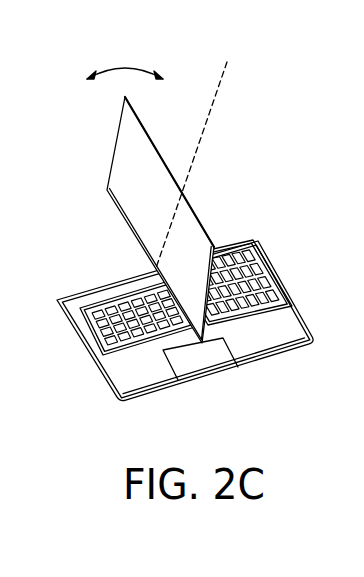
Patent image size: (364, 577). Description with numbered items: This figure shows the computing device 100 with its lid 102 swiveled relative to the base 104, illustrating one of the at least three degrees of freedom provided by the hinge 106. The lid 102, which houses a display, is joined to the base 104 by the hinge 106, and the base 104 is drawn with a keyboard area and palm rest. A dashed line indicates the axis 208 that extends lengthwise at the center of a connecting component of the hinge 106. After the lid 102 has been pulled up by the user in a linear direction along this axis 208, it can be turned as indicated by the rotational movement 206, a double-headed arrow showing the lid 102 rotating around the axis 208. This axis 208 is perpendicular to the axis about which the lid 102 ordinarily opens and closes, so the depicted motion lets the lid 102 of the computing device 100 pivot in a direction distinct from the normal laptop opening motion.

The computing device 100 is at (173, 246).
The lid 102 is at (200, 210).
The base 104 is at (130, 388).
The hinge 106 is at (153, 268).
The rotational movement 206 is at (127, 65).
The axis 208 is at (215, 100).